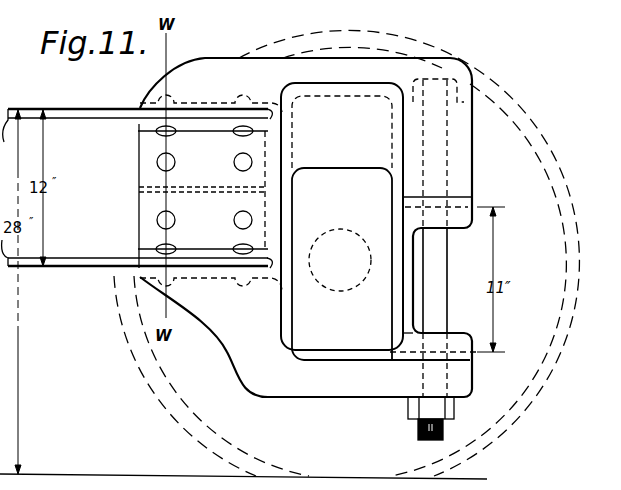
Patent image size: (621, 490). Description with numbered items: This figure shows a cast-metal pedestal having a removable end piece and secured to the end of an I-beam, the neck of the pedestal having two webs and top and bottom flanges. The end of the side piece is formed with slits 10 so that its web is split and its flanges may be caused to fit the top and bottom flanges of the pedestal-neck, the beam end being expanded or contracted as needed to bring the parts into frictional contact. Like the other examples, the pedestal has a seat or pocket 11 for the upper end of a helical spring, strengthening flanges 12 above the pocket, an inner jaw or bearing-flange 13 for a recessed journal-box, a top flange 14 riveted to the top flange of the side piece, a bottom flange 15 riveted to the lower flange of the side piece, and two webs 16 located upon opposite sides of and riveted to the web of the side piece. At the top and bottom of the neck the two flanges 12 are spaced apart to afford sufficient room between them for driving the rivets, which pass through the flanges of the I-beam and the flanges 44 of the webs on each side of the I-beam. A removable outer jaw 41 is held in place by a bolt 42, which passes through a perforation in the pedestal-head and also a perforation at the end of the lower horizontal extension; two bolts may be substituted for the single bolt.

The slits 10 is at (131, 193).
The seat or pocket 11 is at (355, 143).
The strengthening flange 12 is at (218, 61).
The inner jaw or bearing-flange 13 is at (292, 229).
The top flange 14 is at (140, 108).
The bottom flange 15 is at (143, 271).
The webs 16 is at (204, 192).
The removable outer jaw 41 is at (462, 246).
The bolt 42 is at (455, 296).
The flanges of the webs 44 is at (130, 156).